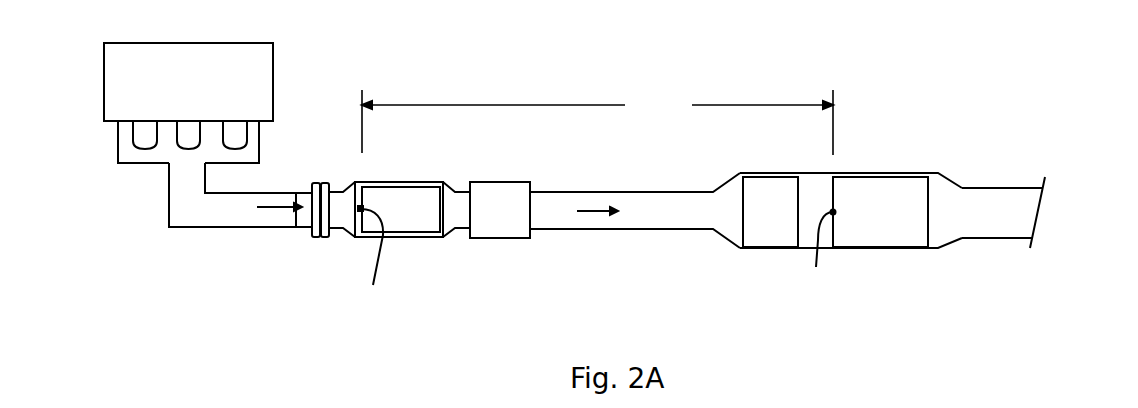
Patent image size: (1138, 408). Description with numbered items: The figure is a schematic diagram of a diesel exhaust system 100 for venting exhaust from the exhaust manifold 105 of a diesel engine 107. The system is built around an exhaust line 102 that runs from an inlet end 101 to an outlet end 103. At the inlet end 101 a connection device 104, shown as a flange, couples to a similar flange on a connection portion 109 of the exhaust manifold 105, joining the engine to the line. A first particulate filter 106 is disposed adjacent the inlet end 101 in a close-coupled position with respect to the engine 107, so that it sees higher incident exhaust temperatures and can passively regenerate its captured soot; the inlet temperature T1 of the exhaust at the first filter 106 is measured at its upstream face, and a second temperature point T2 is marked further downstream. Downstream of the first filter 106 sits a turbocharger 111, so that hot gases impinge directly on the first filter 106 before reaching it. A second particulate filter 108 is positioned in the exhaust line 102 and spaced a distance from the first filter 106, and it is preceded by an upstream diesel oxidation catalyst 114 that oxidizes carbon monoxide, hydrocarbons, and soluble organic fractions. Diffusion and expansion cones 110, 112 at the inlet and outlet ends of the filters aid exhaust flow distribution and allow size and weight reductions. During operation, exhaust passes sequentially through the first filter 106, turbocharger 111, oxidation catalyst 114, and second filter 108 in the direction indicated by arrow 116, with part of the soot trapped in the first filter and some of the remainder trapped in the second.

The exhaust system 100 is at (616, 175).
The inlet end 101 is at (337, 218).
The exhaust line 102 is at (678, 190).
The outlet end 103 is at (993, 230).
The connection device 104 is at (333, 180).
The exhaust manifold 105 is at (220, 218).
The first particulate filter 106 is at (400, 190).
The diesel engine 107 is at (267, 68).
The second particulate filter 108 is at (875, 175).
The connection portion 109 is at (303, 215).
The diffusion and expansion cone 110 is at (447, 234).
The turbocharger 111 is at (502, 180).
The diffusion and expansion cone 112 is at (727, 243).
The diesel oxidation catalyst 114 is at (772, 175).
The arrow 116 is at (278, 209).
The inlet temperature of the first filter T1 is at (368, 267).
The temperature sensor T2 is at (820, 257).